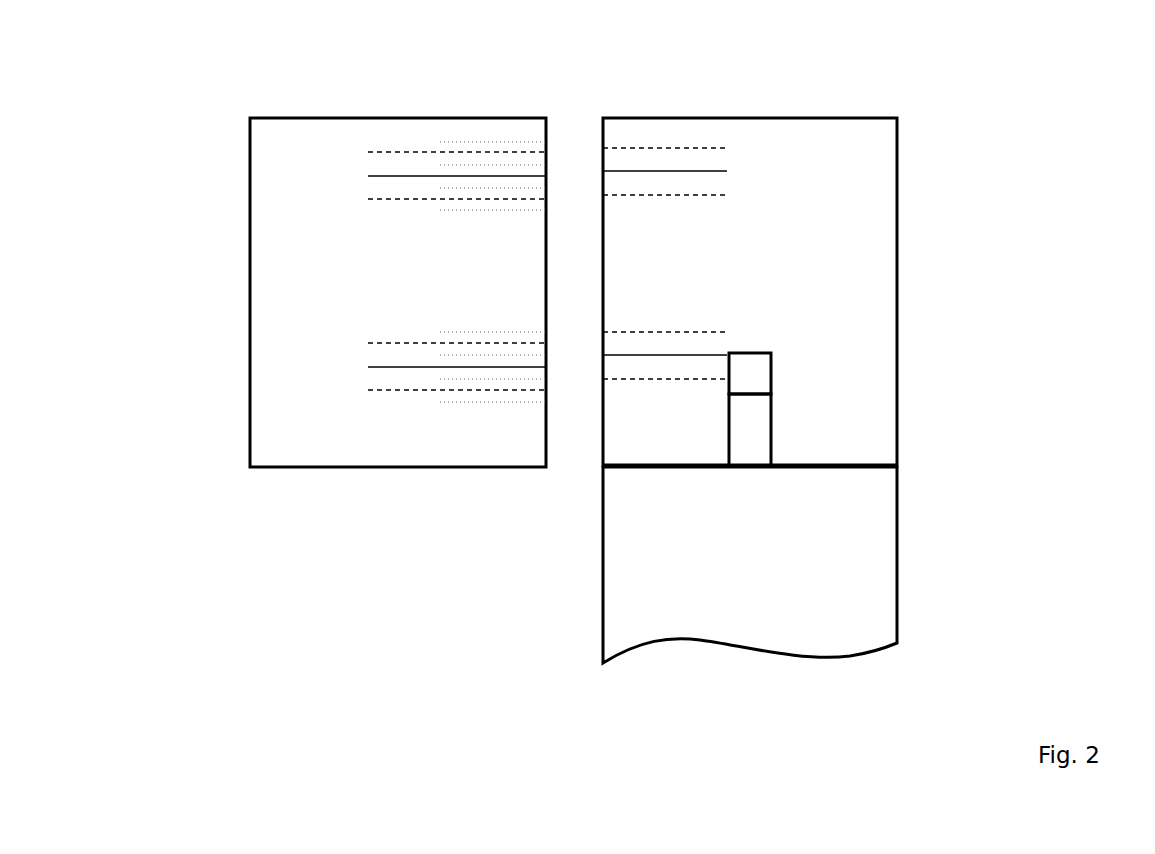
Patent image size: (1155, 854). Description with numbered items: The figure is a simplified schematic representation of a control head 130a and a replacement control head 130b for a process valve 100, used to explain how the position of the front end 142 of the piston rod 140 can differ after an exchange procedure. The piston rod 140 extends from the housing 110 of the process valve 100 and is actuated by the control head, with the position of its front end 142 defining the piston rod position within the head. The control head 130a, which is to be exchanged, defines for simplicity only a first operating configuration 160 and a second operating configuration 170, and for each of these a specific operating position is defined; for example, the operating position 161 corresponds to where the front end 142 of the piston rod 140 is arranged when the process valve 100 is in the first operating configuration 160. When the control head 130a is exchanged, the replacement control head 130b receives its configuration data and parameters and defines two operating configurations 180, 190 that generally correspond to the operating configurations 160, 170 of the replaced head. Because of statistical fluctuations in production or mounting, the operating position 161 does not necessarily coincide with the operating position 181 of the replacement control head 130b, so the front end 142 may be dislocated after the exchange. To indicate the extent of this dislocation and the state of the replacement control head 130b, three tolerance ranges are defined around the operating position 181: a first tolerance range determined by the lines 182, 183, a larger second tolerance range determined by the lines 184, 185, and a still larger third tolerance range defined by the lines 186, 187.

The process valve 100 is at (757, 677).
The housing 110 is at (897, 566).
The control head 130a is at (790, 116).
The replacement control head 130b is at (466, 116).
The piston rod 140 is at (750, 436).
The front end 142 is at (750, 376).
The first operating configuration 160 is at (841, 290).
The operating position 161 is at (712, 352).
The second operating configuration 170 is at (797, 167).
The operating configuration 180 is at (349, 351).
The operating position 181 is at (537, 367).
The line 182 is at (518, 378).
The line 183 is at (527, 355).
The line 184 is at (512, 390).
The line 185 is at (513, 343).
The line 186 is at (495, 402).
The line 187 is at (502, 330).
The operating configuration 190 is at (296, 177).